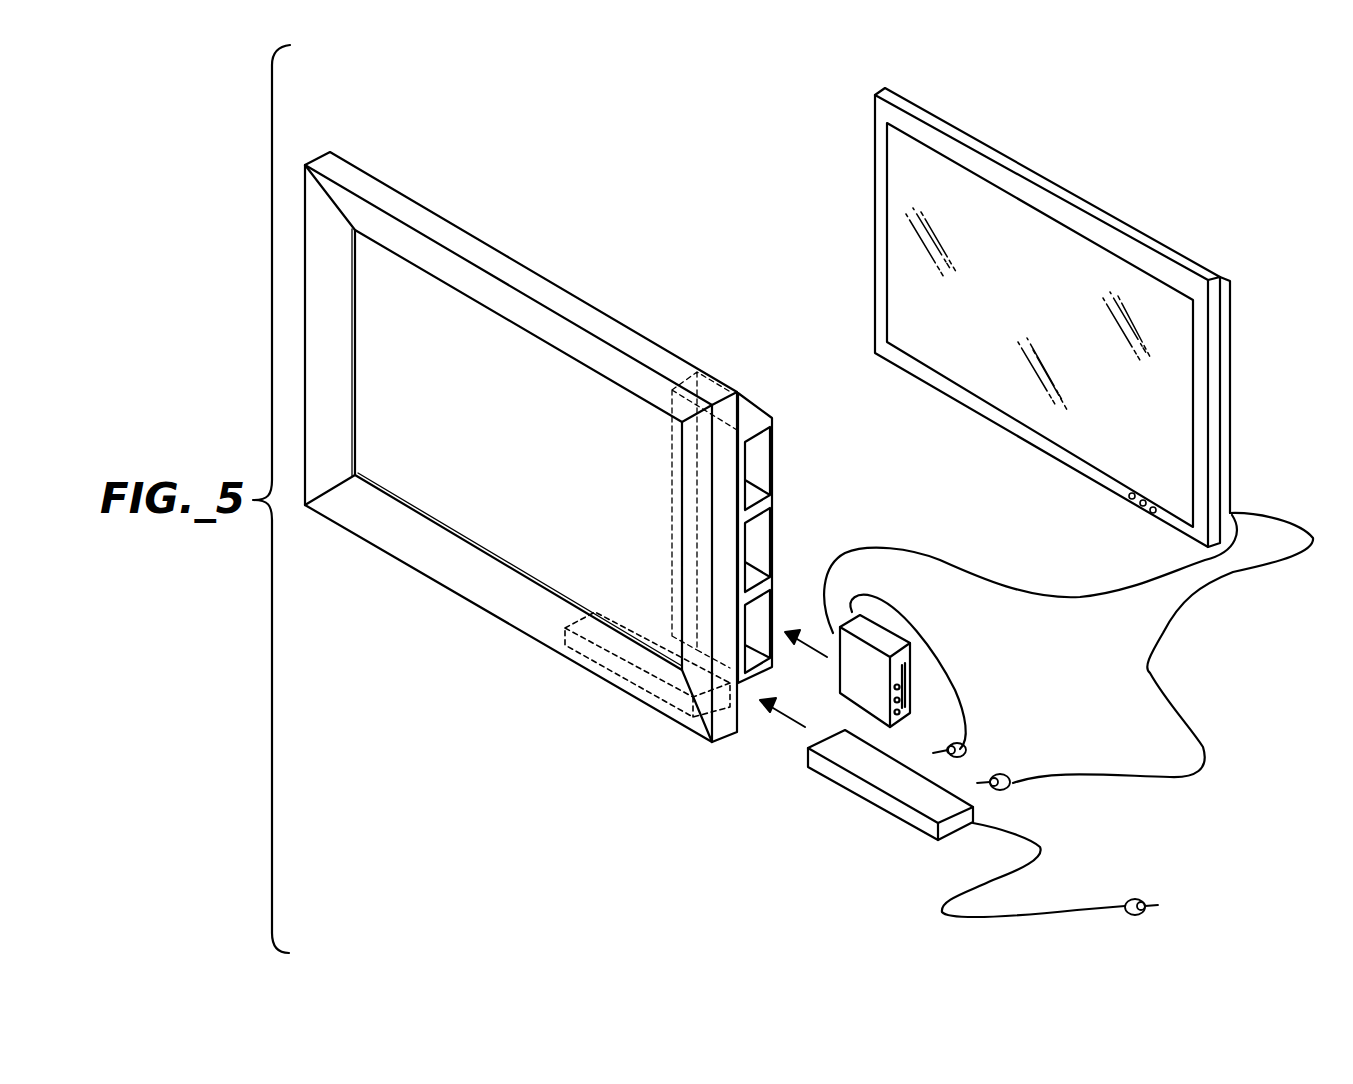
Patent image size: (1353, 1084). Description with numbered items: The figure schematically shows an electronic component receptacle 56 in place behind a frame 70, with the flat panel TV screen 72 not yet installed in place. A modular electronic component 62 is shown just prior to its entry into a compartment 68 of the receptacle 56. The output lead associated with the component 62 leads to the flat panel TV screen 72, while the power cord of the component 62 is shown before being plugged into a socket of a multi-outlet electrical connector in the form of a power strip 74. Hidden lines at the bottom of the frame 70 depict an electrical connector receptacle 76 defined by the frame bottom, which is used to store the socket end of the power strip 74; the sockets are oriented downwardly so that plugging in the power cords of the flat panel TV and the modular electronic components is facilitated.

The frame 70 is at (517, 272).
The electronic component receptacle 56 is at (747, 422).
The compartment 68 is at (760, 613).
The modular electronic component 62 is at (860, 650).
The power strip 74 is at (888, 800).
The electrical connector receptacle 76 is at (653, 692).
The flat panel TV screen 72 is at (1073, 203).